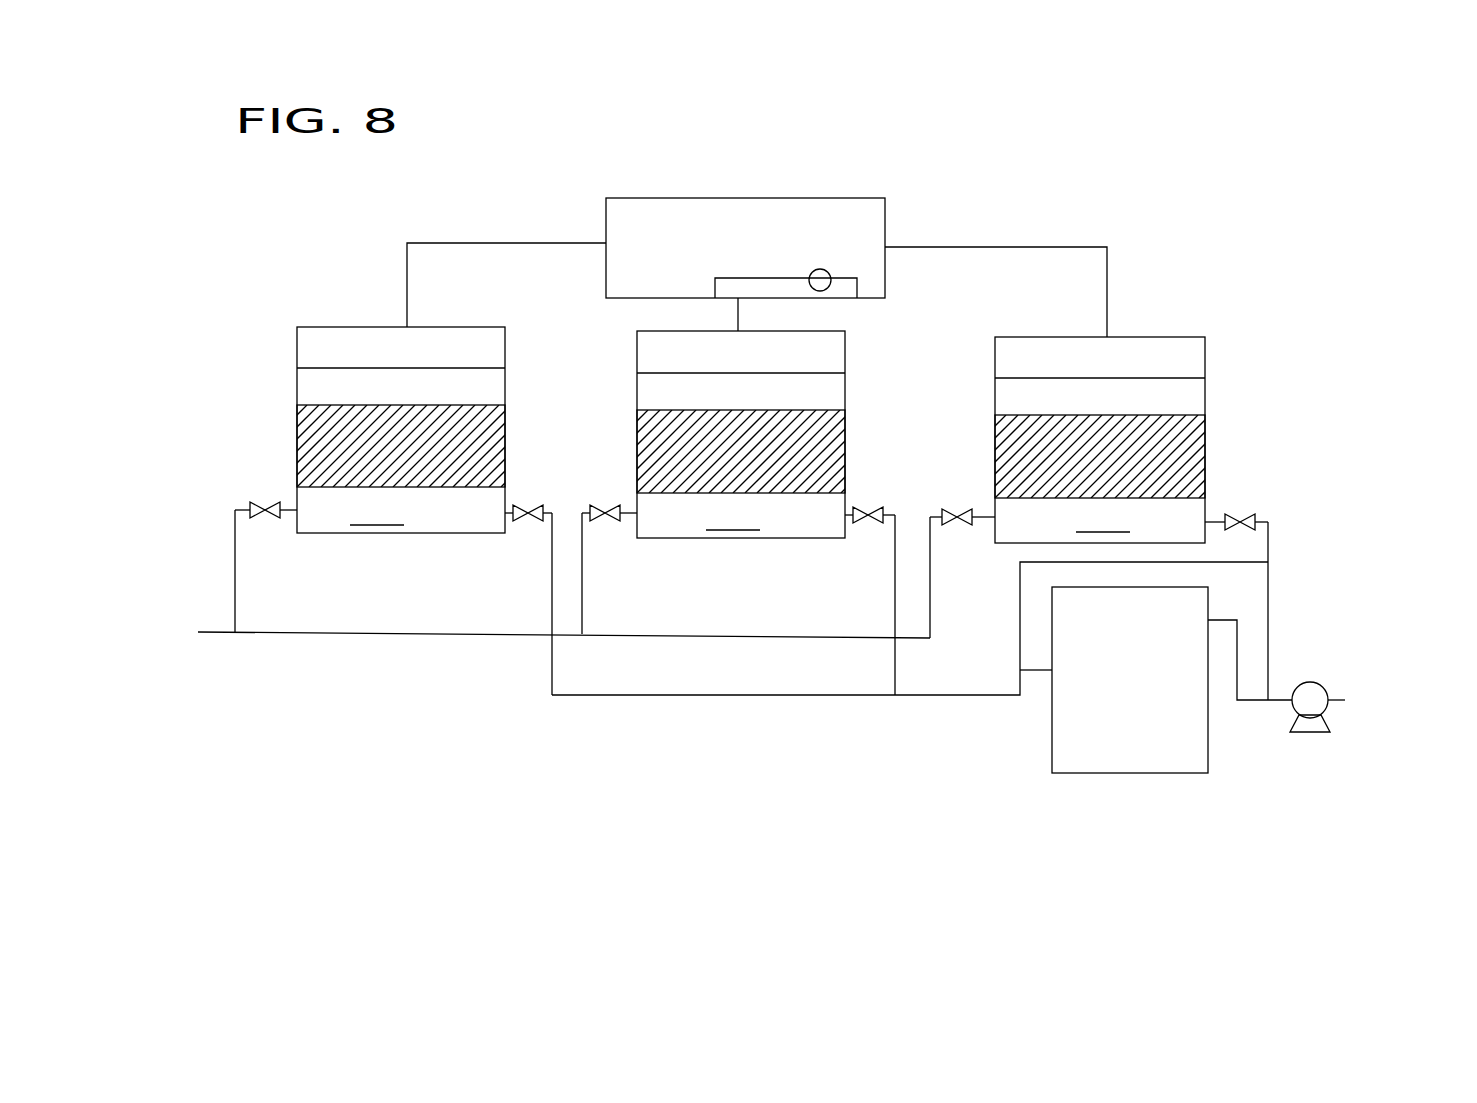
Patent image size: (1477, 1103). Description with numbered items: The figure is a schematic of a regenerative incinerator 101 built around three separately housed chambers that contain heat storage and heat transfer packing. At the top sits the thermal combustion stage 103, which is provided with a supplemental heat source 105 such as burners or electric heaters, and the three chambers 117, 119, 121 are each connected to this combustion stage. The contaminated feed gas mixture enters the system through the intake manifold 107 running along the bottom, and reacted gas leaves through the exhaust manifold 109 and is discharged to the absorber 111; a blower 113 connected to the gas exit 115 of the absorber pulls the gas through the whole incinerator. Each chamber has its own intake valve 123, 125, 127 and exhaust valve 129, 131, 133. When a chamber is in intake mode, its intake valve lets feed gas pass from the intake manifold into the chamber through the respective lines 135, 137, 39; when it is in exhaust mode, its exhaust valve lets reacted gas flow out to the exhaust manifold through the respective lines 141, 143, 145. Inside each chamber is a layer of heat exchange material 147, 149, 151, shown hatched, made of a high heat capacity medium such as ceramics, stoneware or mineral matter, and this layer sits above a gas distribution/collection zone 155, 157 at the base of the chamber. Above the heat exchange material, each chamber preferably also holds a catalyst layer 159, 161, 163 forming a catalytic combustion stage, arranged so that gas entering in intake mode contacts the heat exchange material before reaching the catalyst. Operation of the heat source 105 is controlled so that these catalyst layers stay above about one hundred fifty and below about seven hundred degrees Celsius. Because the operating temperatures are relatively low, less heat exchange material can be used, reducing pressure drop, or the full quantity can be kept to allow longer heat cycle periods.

The regenerative incinerator 101 is at (990, 217).
The thermal combustion stage 103 is at (790, 197).
The supplemental heat source 105 is at (826, 275).
The intake manifold 107 is at (436, 640).
The exhaust manifold 109 is at (650, 695).
The absorber 111 is at (1105, 733).
The blower 113 is at (1300, 733).
The gas exit 115 is at (1238, 660).
The first chamber 117 is at (297, 352).
The second chamber 119 is at (637, 348).
The third chamber 121 is at (1011, 328).
The intake valve 123 is at (278, 505).
The intake valve 125 is at (612, 508).
The intake valve 127 is at (968, 512).
The exhaust valve 129 is at (535, 507).
The exhaust valve 131 is at (873, 512).
The exhaust valve 133 is at (1243, 512).
The intake line 135 is at (236, 610).
The intake line 137 is at (585, 615).
The intake line 39 is at (932, 612).
The exhaust line 141 is at (550, 588).
The exhaust line 143 is at (893, 588).
The exhaust line 145 is at (1270, 613).
The heat exchange material layer 147 is at (297, 445).
The heat exchange material layer 149 is at (673, 430).
The heat exchange material layer 151 is at (995, 443).
The gas distribution/collection zone 155 is at (555, 511).
The gas distribution/collection zone 157 is at (1103, 515).
The catalyst layer 159 is at (490, 388).
The catalyst layer 161 is at (847, 395).
The catalyst layer 163 is at (1205, 398).